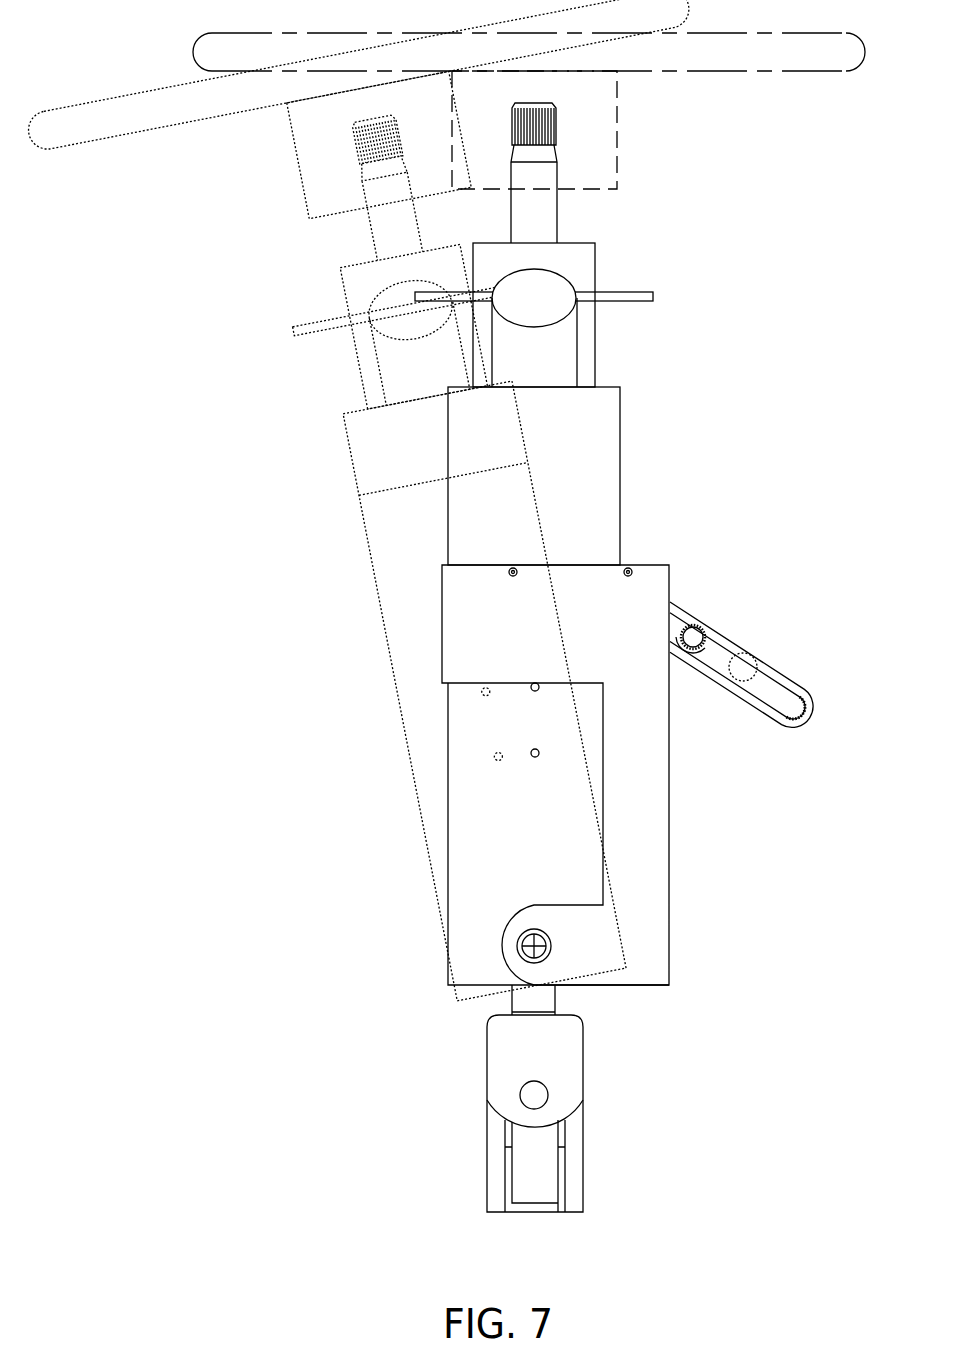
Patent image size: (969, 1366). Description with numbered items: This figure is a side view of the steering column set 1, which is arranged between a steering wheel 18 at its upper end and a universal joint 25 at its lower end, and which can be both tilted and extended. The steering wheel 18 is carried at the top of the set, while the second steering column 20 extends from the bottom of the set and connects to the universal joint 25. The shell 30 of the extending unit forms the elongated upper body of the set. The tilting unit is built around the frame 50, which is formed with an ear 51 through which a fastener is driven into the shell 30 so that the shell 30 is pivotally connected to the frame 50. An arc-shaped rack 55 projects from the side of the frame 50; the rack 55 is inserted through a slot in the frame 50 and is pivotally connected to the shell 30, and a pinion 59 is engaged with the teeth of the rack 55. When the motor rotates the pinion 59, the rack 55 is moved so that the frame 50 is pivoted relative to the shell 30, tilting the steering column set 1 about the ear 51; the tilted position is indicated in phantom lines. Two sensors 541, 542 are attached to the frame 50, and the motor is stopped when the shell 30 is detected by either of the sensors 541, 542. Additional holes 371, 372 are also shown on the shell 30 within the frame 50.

The steering column set 1 is at (667, 246).
The steering wheel 18 is at (730, 71).
The second steering column 20 is at (552, 995).
The universal joint 25 is at (578, 1088).
The shell 30 is at (621, 442).
The frame 50 is at (671, 829).
The ear 51 is at (512, 959).
The rack 55 is at (783, 682).
The pinion 59 is at (708, 640).
The first positioning hole 371 is at (535, 691).
The second positioning hole 372 is at (535, 757).
The sensor 541 is at (512, 567).
The sensor 542 is at (630, 568).